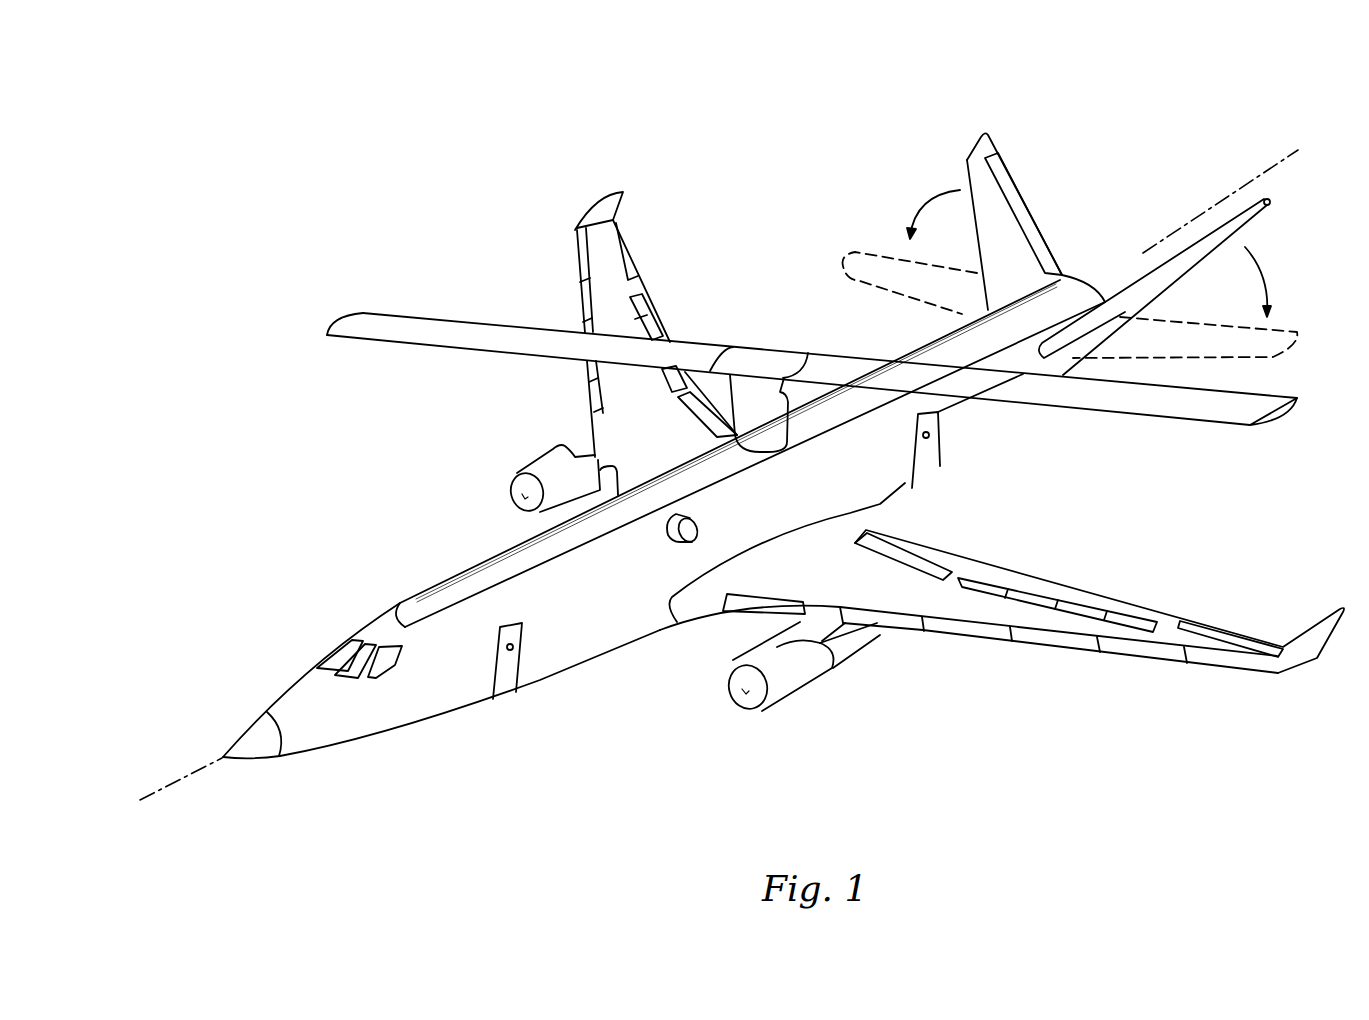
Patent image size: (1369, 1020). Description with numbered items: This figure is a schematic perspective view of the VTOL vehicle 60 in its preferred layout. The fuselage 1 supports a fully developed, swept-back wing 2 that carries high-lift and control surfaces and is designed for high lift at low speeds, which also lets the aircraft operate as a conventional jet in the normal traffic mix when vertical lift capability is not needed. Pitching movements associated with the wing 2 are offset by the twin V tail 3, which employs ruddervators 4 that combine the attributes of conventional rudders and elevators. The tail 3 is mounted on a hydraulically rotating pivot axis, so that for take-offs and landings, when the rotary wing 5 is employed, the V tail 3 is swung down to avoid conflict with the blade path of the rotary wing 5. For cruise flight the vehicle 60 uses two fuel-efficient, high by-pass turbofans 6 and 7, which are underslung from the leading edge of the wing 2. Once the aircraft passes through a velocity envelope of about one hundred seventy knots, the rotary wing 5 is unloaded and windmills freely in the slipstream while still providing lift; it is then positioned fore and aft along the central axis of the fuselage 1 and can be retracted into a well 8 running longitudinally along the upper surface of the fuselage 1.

The VTOL vehicle 60 is at (246, 180).
The fuselage 1 is at (385, 638).
The swept-back wing 2 is at (1142, 633).
The twin V tail 3 is at (1213, 208).
The ruddervators 4 is at (1040, 243).
The rotary wing 5 is at (445, 330).
The turbofan engine 6 is at (793, 695).
The turbofan engine 7 is at (540, 467).
The well 8 is at (448, 592).